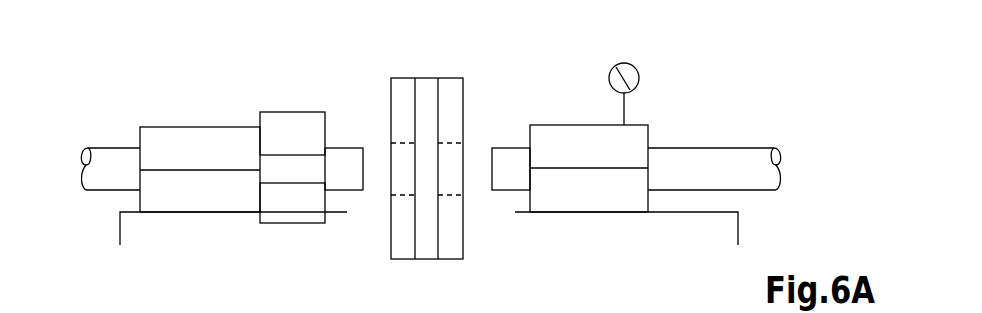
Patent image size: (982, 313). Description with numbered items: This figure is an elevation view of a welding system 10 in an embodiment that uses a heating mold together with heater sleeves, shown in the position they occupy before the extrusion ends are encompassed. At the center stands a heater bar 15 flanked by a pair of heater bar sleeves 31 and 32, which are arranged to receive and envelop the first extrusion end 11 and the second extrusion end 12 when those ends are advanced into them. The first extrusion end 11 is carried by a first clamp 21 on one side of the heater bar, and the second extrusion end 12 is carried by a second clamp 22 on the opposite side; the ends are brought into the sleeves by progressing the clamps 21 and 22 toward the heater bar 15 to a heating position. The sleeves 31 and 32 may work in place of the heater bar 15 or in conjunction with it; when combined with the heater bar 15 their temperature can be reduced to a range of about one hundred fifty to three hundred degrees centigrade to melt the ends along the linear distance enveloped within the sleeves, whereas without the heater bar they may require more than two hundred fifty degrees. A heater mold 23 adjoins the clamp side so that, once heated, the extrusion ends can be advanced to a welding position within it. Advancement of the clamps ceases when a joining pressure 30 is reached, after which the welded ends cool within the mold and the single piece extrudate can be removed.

The pipe joining system 10 is at (340, 82).
The first extrusion end 11 is at (722, 146).
The second extrusion end 12 is at (110, 146).
The heater bar 15 is at (430, 78).
The first clamp 21 is at (593, 122).
The second clamp 22 is at (192, 125).
The heater mold 23 is at (294, 108).
The joining pressure 30 is at (639, 72).
The heater bar sleeve 31 is at (455, 78).
The heater bar sleeve 32 is at (401, 78).